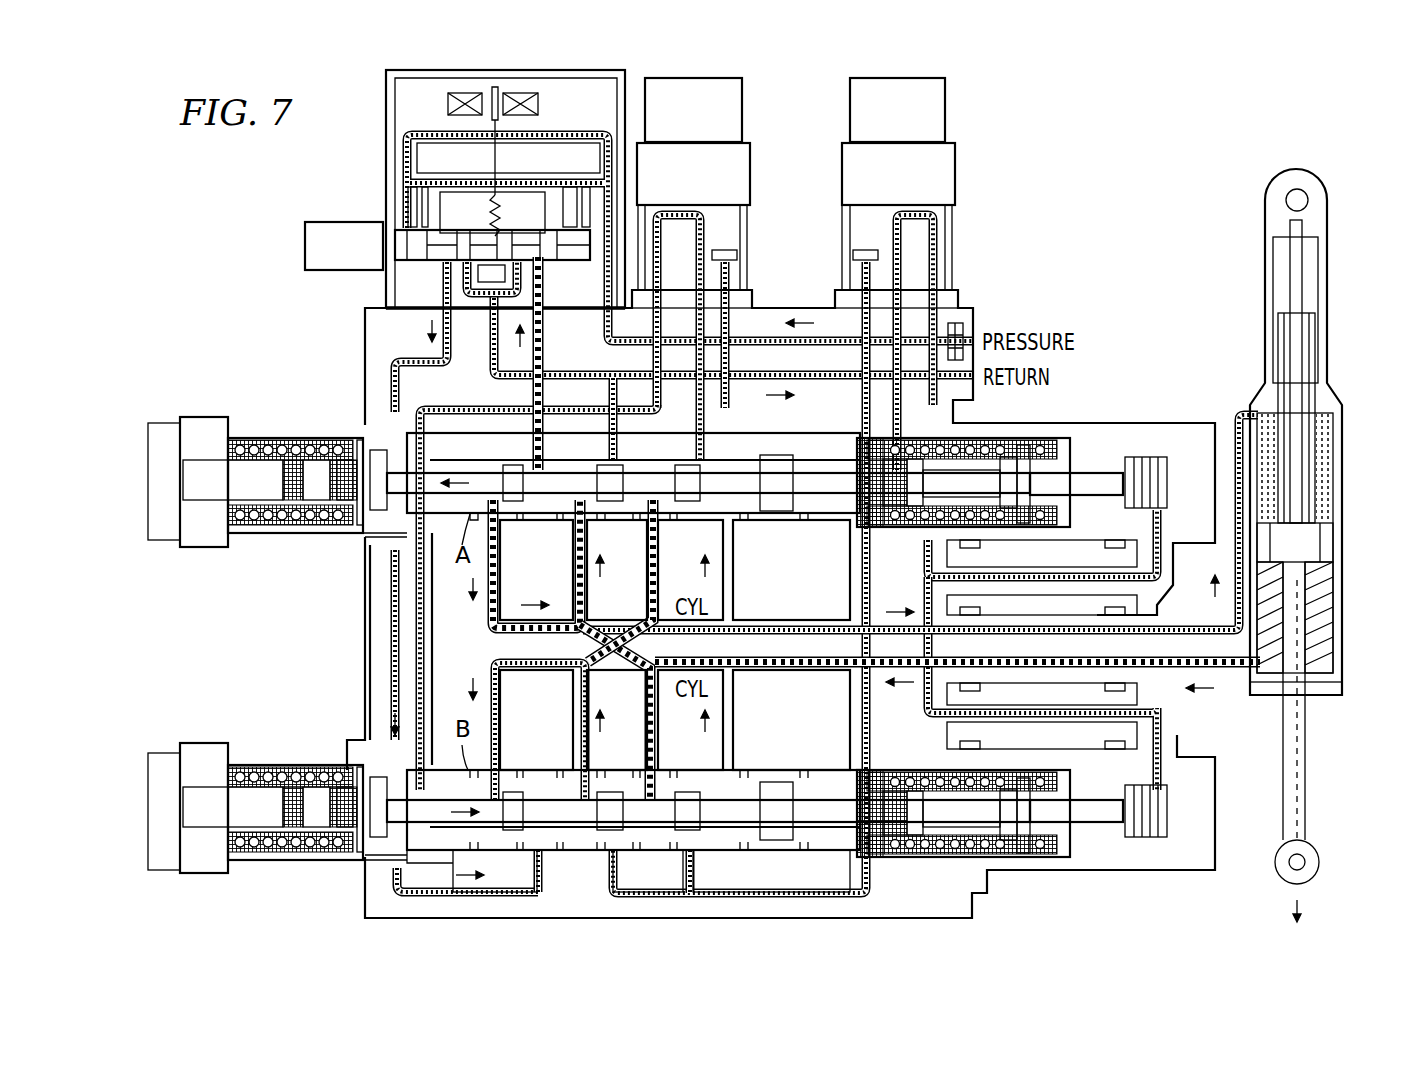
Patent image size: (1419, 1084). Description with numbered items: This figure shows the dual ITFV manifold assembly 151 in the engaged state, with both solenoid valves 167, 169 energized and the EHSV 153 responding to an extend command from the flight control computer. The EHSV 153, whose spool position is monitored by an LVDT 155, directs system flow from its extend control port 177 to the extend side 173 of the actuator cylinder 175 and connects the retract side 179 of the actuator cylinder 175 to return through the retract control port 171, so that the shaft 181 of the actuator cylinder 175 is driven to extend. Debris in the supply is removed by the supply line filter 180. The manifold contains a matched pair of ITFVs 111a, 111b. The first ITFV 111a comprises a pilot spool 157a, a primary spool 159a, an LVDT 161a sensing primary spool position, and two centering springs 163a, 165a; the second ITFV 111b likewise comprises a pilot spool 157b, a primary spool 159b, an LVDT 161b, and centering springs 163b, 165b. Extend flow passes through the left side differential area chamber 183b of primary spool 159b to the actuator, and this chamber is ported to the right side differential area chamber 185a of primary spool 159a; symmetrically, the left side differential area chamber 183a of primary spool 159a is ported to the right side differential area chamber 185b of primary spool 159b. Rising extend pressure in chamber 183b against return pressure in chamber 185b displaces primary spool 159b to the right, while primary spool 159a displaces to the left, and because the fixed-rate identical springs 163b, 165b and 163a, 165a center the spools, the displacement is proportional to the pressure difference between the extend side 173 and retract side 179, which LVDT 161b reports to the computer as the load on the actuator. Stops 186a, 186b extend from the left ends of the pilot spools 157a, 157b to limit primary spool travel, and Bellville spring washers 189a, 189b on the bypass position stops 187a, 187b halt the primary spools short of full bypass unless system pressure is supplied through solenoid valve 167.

The dual ITFV manifold assembly 151 is at (194, 196).
The EHSV 153 is at (395, 148).
The LVDT 155 is at (305, 245).
The extend EHSV control port 177 is at (445, 220).
The retract EHSV control port 171 is at (527, 267).
The solenoid valve 167 is at (754, 162).
The solenoid valve 169 is at (960, 162).
The supply line filter 180 is at (963, 330).
The actuator cylinder 175 is at (1300, 165).
The extend side of actuator cylinder 173 is at (1320, 437).
The retract side of actuator cylinder 179 is at (1322, 632).
The shaft of actuator cylinder 181 is at (1303, 735).
The ITFV 111a is at (589, 485).
The ITFV 111b is at (589, 779).
The LVDT 161a is at (215, 458).
The LVDT 161b is at (217, 787).
The spool centering spring 163a is at (265, 447).
The spool centering spring 163b is at (275, 775).
The primary spool 159a is at (312, 458).
The primary spool 159b is at (318, 787).
The primary spool bypass position stop 187a is at (372, 535).
The primary spool bypass position stop 187b is at (357, 848).
The Bellville spring washer 189a is at (378, 542).
The Bellville spring washer 189b is at (378, 862).
The left side differential area chamber 183a is at (527, 521).
The left side differential area chamber 183b is at (502, 769).
The right side differential area chamber 185a is at (752, 521).
The right side differential area chamber 185b is at (762, 786).
The stop 186a is at (1020, 462).
The stop 186b is at (990, 858).
The pilot spool 157a is at (1115, 472).
The pilot spool 157b is at (1105, 828).
The spool centering spring 165a is at (1040, 500).
The spool centering spring 165b is at (950, 858).